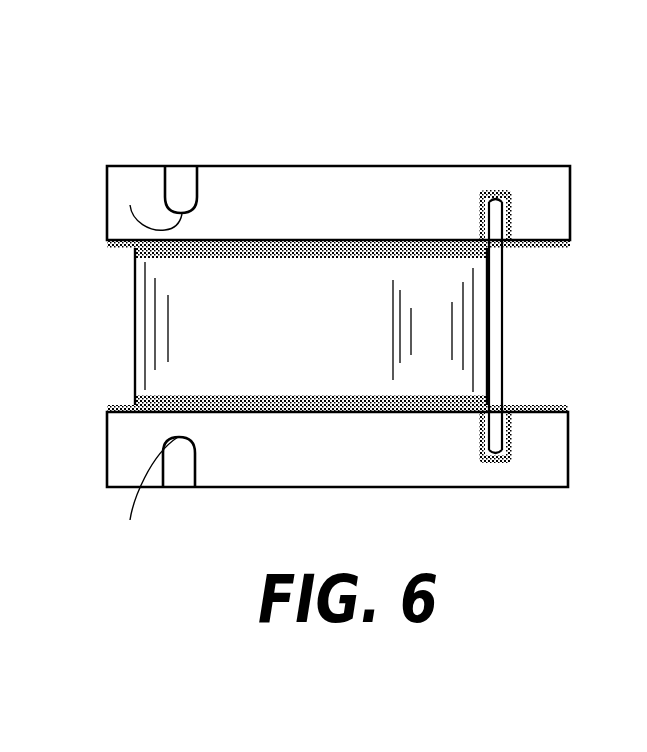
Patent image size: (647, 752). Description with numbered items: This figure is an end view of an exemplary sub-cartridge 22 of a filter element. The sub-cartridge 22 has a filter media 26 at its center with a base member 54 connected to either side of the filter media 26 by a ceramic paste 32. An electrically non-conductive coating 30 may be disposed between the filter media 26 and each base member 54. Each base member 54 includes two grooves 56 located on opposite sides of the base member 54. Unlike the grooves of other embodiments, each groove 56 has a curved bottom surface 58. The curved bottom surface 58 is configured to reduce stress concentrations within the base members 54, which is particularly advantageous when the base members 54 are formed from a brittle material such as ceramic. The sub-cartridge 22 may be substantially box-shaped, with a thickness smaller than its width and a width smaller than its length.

The sub-cartridge 22 is at (258, 84).
The filter media 26 is at (316, 338).
The electrically non-conductive coating 30 is at (550, 245).
The ceramic paste 32 is at (504, 250).
The base member 54 is at (316, 215).
The groove 56 is at (200, 190).
The curved bottom surface 58 is at (508, 520).